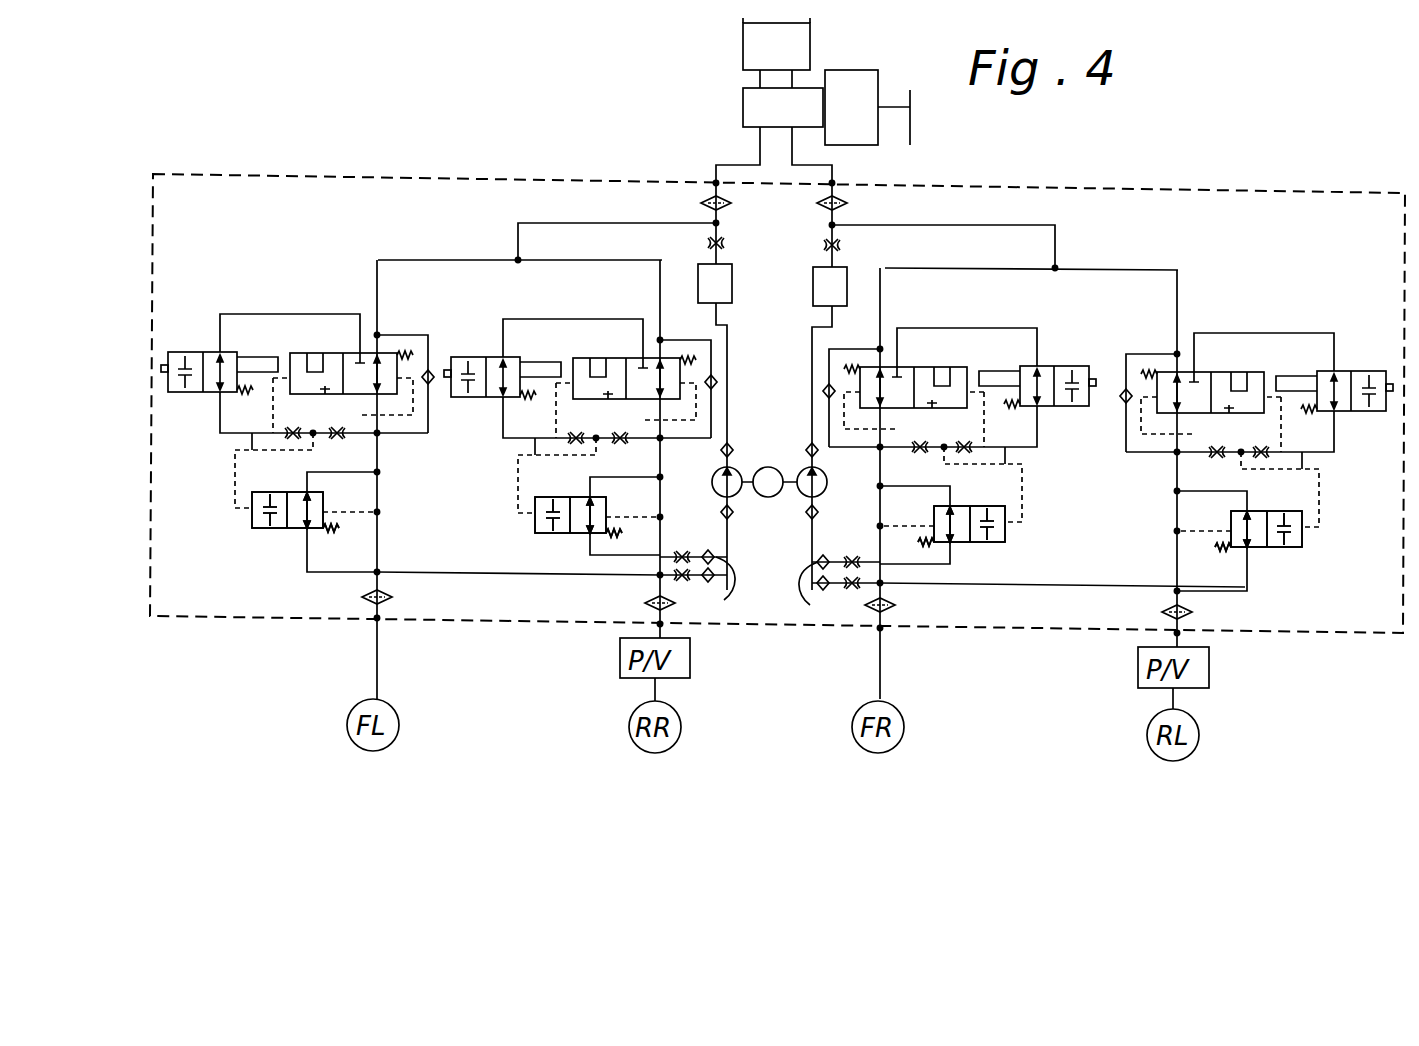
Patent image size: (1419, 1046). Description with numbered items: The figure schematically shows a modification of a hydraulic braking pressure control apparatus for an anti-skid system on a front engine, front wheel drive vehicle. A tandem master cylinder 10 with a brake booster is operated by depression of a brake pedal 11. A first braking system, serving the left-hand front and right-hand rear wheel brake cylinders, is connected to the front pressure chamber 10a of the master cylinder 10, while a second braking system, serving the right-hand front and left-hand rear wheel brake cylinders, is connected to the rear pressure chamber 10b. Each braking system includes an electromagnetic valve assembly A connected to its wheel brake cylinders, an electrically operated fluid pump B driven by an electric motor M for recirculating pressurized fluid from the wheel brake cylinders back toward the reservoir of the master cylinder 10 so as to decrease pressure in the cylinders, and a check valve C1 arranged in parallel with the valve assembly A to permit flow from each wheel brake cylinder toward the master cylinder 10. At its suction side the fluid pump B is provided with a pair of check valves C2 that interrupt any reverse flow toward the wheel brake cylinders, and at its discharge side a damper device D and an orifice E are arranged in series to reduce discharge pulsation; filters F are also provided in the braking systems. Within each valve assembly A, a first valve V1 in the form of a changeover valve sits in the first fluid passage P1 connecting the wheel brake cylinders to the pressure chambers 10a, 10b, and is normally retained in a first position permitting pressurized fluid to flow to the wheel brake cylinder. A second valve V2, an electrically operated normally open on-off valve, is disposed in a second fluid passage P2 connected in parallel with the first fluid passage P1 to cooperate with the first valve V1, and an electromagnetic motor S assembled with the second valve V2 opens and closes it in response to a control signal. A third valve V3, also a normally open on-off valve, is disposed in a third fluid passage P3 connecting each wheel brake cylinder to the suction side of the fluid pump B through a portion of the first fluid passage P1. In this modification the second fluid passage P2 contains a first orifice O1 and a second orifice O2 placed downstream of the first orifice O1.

The tandem master cylinder 10 is at (738, 103).
The front pressure chamber 10a is at (760, 128).
The rear pressure chamber 10b is at (792, 128).
The brake pedal 11 is at (912, 140).
The first fluid passage P1 is at (612, 222).
The filter F is at (731, 203).
The orifice E is at (724, 243).
The damper device D is at (772, 285).
The check valve C1 is at (430, 368).
The first valve V1 is at (352, 398).
The second valve V2 is at (226, 404).
The third valve V3 is at (290, 530).
The electromagnetic motor S is at (165, 395).
The first orifice O1 is at (294, 438).
The second orifice O2 is at (338, 434).
The second fluid passage P2 is at (777, 480).
The third fluid passage P3 is at (306, 566).
The electromagnetic valve assembly A is at (222, 488).
The fluid pump B is at (710, 484).
The electric motor M is at (769, 482).
The check valve C2 is at (767, 585).